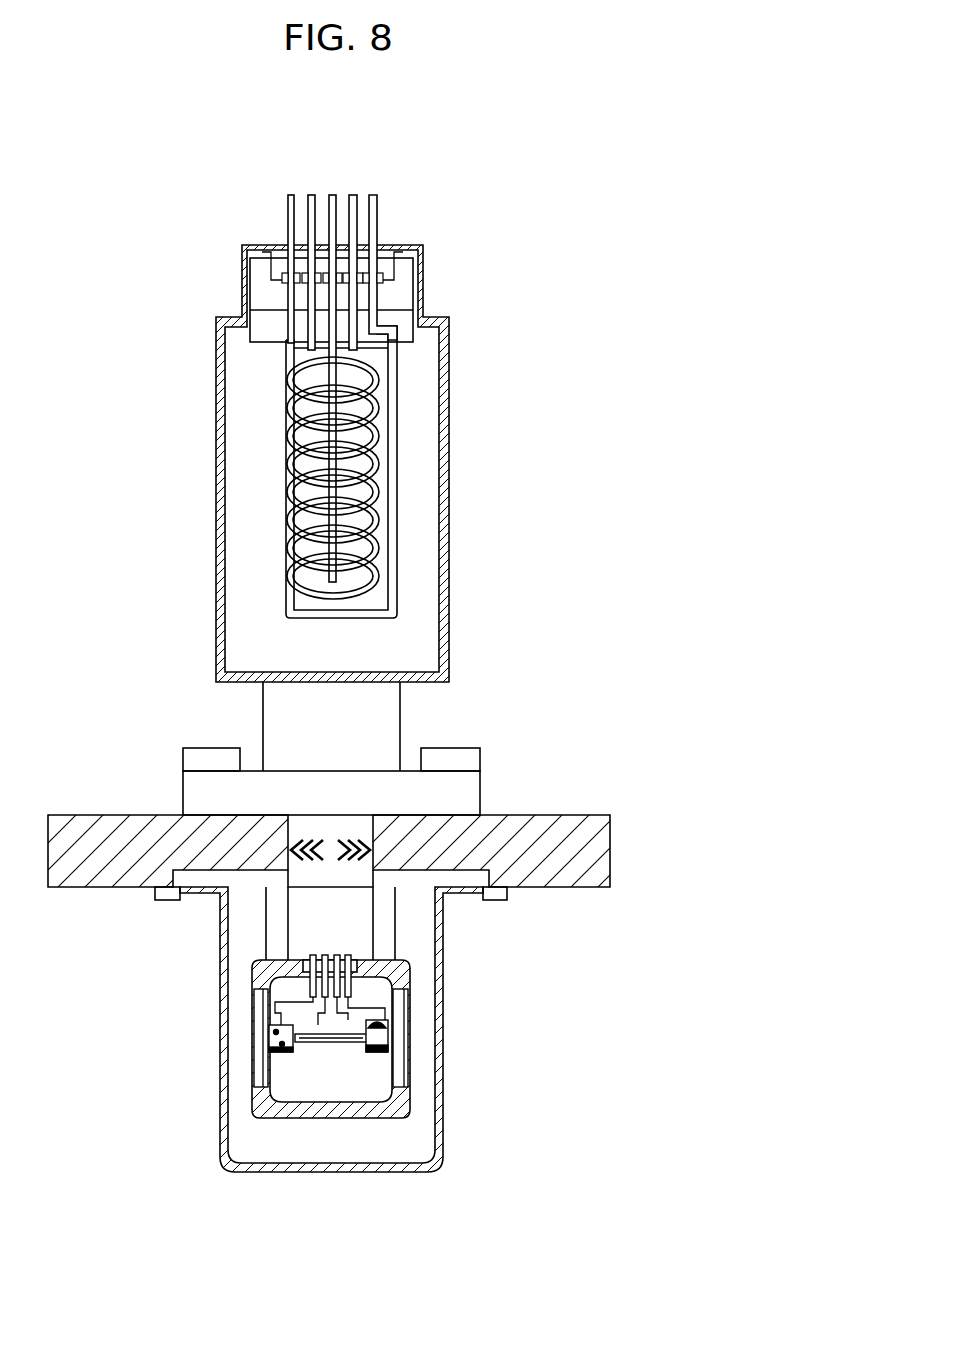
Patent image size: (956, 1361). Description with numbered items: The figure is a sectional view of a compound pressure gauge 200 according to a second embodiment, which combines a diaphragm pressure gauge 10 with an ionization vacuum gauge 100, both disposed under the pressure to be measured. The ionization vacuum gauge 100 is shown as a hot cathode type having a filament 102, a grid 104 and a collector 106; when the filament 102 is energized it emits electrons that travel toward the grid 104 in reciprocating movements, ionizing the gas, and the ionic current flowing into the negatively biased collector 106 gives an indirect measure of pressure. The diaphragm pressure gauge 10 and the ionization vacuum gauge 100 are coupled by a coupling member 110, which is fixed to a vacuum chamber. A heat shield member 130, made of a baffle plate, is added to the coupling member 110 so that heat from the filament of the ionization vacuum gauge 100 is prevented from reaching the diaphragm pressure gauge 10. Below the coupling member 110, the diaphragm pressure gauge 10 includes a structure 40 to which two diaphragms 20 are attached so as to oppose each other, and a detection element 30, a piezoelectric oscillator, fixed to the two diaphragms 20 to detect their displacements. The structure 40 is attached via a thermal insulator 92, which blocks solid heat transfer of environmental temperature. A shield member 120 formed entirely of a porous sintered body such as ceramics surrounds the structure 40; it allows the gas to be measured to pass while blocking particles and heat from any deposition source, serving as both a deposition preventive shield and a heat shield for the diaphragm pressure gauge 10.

The compound pressure gauge 200 is at (505, 221).
The ionization vacuum gauge 100 is at (450, 461).
The filament 102 is at (300, 385).
The grid 104 is at (300, 600).
The collector 106 is at (298, 520).
The coupling member 110 is at (610, 845).
The heat shield member 130 is at (288, 840).
The thermal insulator 92 is at (275, 930).
The shield member 120 is at (443, 1115).
The diaphragm pressure gauge 10 is at (320, 1115).
The diaphragms 20 is at (262, 1015).
The detection element 30 is at (330, 1045).
The structure 40 is at (371, 1110).